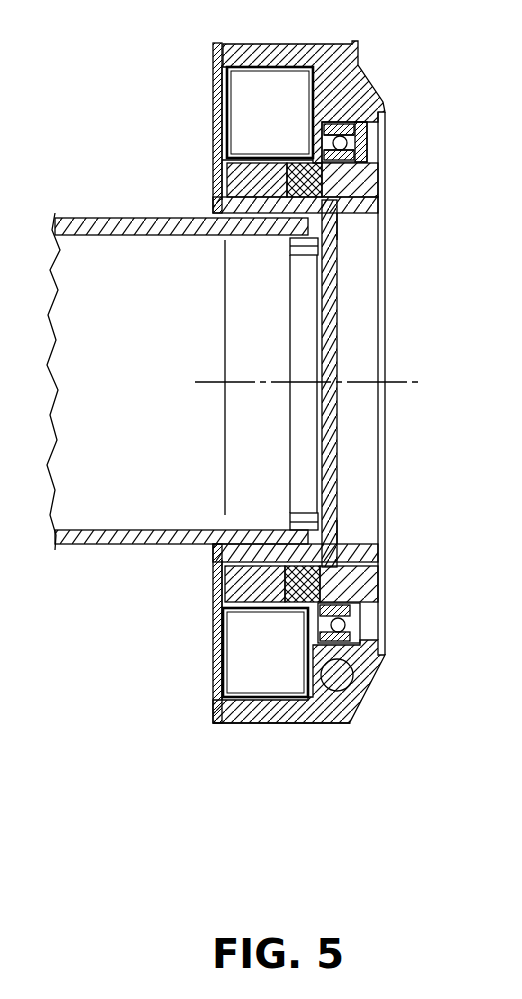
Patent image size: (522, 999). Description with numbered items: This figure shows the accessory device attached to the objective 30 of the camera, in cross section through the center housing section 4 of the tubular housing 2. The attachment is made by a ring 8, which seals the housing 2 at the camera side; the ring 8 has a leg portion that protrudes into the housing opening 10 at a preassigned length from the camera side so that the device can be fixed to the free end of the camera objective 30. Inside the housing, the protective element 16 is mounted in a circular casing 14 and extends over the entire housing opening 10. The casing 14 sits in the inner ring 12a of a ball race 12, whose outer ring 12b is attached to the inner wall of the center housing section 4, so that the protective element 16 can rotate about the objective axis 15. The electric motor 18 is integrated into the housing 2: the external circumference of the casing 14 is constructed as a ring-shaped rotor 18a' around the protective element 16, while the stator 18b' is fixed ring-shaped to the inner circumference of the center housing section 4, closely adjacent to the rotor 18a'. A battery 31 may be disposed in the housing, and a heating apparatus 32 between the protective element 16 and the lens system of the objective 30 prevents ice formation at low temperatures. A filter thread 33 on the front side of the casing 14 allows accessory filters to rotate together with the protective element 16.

The tubular housing 2 is at (187, 767).
The center housing section 4 is at (352, 55).
The ring 8 is at (213, 92).
The housing opening 10 is at (268, 366).
The ball race 12 is at (370, 133).
The inner ring 12a is at (365, 148).
The outer ring 12b is at (362, 115).
The casing 14 is at (233, 187).
The objective axis 15 is at (273, 382).
The protective element 16 is at (322, 316).
The electric motor 18 is at (113, 53).
The rotor 18a' is at (196, 382).
The stator 18b' is at (229, 390).
The objective 30 is at (120, 528).
The battery 31 is at (352, 702).
The heating apparatus 32 is at (290, 265).
The filter thread 33 is at (382, 220).